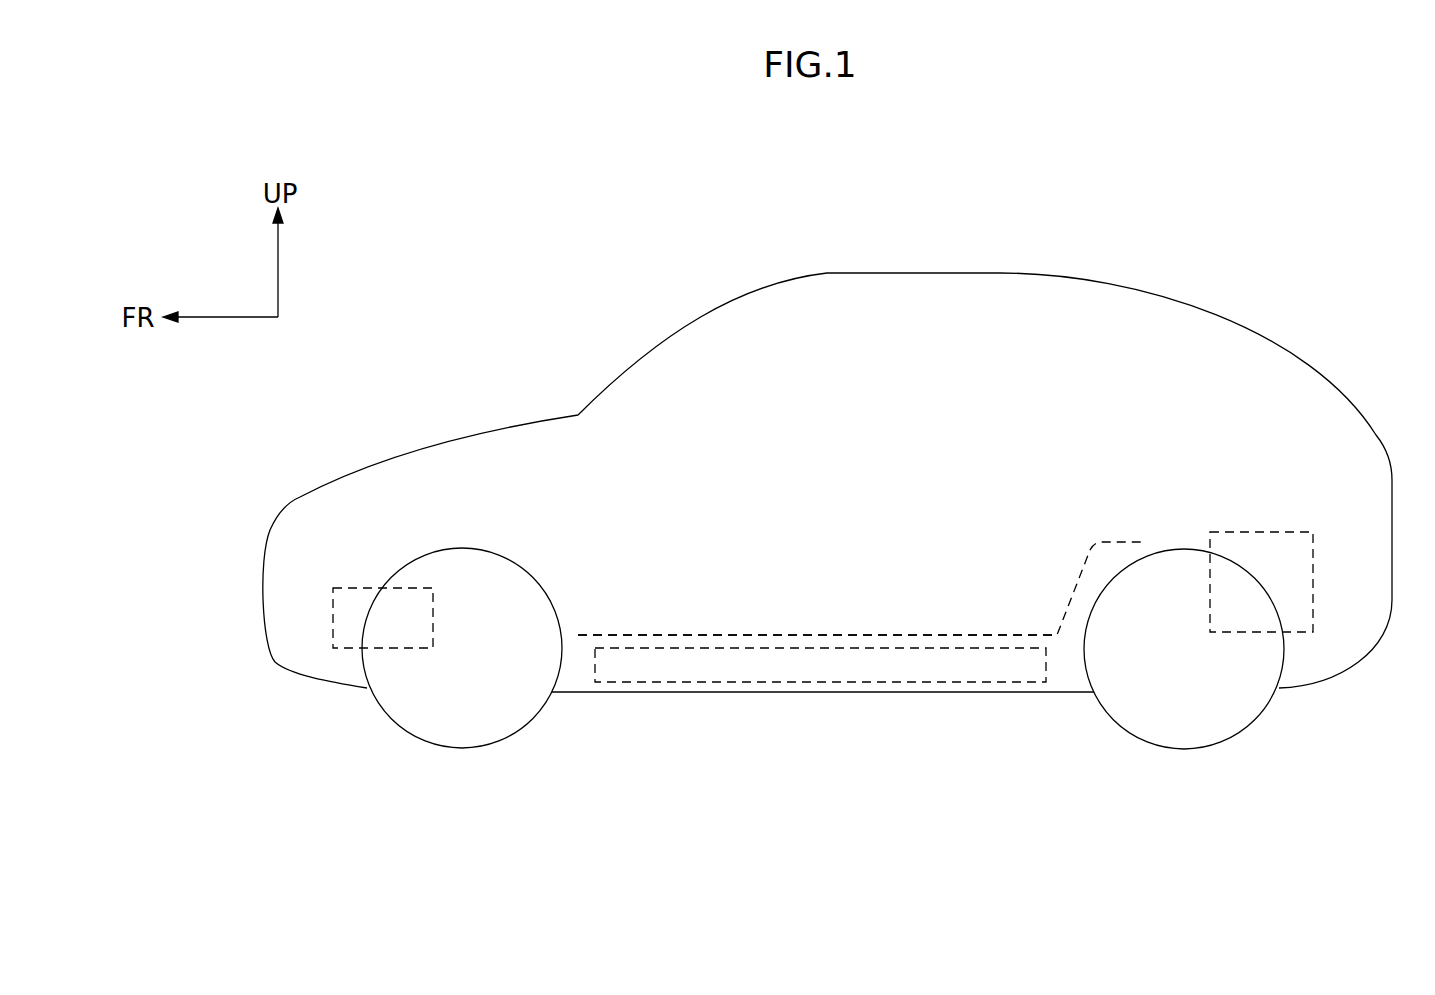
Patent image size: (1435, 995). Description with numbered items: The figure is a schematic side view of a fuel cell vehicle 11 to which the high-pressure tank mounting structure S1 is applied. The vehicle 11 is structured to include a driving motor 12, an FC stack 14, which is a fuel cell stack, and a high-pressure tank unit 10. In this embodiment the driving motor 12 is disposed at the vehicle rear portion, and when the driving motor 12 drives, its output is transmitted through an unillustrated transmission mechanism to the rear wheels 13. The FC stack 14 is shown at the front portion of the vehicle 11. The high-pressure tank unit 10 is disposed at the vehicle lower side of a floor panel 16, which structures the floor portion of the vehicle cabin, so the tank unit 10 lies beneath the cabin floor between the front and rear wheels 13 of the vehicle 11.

The high-pressure tank unit 10 is at (872, 682).
The fuel cell vehicle 11 is at (1277, 197).
The driving motor 12 is at (1248, 532).
The rear wheels 13 is at (1267, 708).
The FC stack 14 is at (367, 588).
The floor panel 16 is at (774, 634).
The high-pressure tank mounting structure S1 is at (587, 317).